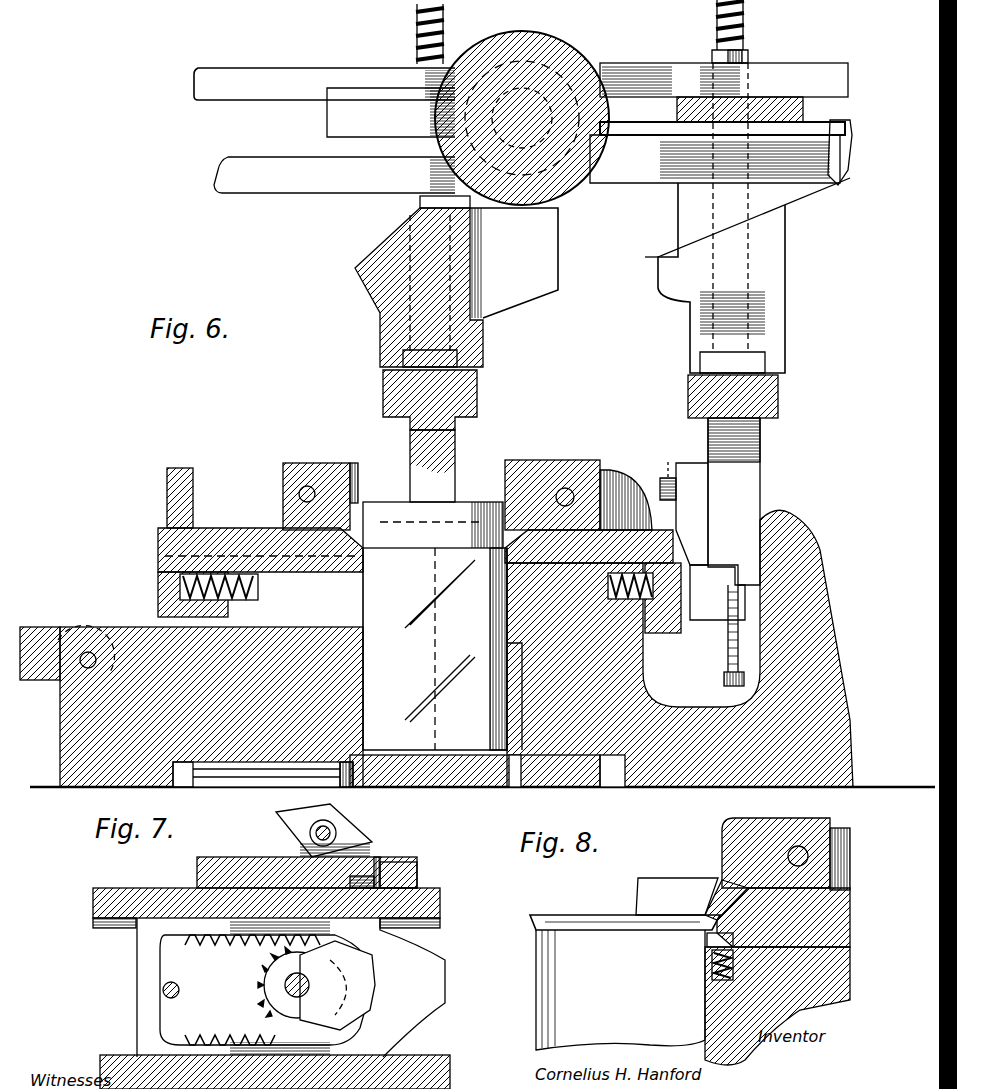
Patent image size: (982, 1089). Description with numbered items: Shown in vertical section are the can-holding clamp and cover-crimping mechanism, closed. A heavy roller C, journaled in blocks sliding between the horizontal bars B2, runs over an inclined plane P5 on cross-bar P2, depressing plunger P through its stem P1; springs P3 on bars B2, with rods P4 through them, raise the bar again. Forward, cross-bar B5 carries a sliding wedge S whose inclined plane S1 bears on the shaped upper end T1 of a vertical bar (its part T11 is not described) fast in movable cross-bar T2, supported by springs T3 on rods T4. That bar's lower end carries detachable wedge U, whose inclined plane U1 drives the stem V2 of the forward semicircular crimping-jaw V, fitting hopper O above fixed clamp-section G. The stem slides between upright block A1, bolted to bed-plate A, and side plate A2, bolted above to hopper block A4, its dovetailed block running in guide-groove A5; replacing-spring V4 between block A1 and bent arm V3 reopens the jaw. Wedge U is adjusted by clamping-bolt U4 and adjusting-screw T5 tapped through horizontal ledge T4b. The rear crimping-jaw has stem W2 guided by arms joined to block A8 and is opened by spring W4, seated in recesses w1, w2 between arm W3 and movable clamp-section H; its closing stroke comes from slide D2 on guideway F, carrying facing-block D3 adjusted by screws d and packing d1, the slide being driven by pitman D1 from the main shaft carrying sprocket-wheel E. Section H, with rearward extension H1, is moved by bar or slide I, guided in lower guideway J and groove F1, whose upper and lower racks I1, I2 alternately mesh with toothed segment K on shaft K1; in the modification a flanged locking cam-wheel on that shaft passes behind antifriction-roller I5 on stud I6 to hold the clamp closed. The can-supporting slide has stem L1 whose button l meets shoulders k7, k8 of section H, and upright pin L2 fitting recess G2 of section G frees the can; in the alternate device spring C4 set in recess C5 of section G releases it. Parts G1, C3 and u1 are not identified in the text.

In FIG. 6, the springs P3 is at (446, 22).
In FIG. 6, the horizontal bars B2 is at (305, 82).
In FIG. 6, the roller C is at (545, 55).
In FIG. 6, the springs T3 is at (750, 22).
In FIG. 6, the rods T4 is at (750, 55).
In FIG. 6, the cross-bar B5 is at (802, 82).
In FIG. 6, the block or wedge S is at (717, 152).
In FIG. 6, the upper end of vertical bar T1 is at (820, 112).
In FIG. 6, the inclined plane S1 is at (790, 190).
In FIG. 6, the shoulder T'' T11 is at (648, 257).
In FIG. 6, the movable cross-bar T2 is at (780, 410).
In FIG. 6, the rods P4 is at (428, 206).
In FIG. 6, the inclined plane P5 is at (376, 255).
In FIG. 6, the cross-bar P2 is at (480, 395).
In FIG. 6, the stem P1 is at (457, 455).
In FIG. 6, the plunger P is at (433, 525).
In FIG. 6, the hopper O is at (362, 495).
In FIG. 8, the hopper O is at (695, 878).
In FIG. 6, the block A8 is at (322, 450).
In FIG. 6, the stem W2 is at (262, 522).
In FIG. 6, the arm W3 is at (158, 606).
In FIG. 6, the spring W4 is at (207, 613).
In FIG. 6, the recess w1 is at (258, 587).
In FIG. 6, the recess w2 is at (178, 588).
In FIG. 6, the movable clamp-section H is at (211, 707).
In FIG. 6, the bar or slide I is at (52, 627).
In FIG. 7, the bar or slide I is at (438, 992).
In FIG. 6, the rearward extension H1 is at (60, 740).
In FIG. 6, the block A4 is at (560, 462).
In FIG. 8, the block A4 is at (782, 818).
In FIG. 6, the vertical side plate A2 is at (612, 470).
In FIG. 8, the vertical side plate A2 is at (840, 826).
In FIG. 6, the clamping-screw or bolt U4 is at (662, 472).
In FIG. 6, the downwardly-bent arm V3 is at (665, 495).
In FIG. 6, the upright block A1 is at (795, 525).
In FIG. 6, the crimping-jaw V is at (500, 575).
In FIG. 8, the crimping-jaw V is at (777, 913).
In FIG. 6, the stem V2 is at (640, 570).
In FIG. 6, the replacing-spring V4 is at (639, 586).
In FIG. 6, the wedge U is at (692, 514).
In FIG. 6, the inclined plane U1 is at (721, 519).
In FIG. 6, the stop u' u1 is at (660, 630).
In FIG. 8, the stop u' u1 is at (705, 940).
In FIG. 6, the horizontal ledge T4b is at (700, 648).
In FIG. 6, the adjusting-screw T5 is at (722, 670).
In FIG. 6, the cylinder G' G1 is at (440, 715).
In FIG. 6, the guide-groove A5 is at (490, 598).
In FIG. 6, the recess G2 is at (508, 700).
In FIG. 6, the upright pin L2 is at (512, 788).
In FIG. 6, the block C3 is at (612, 788).
In FIG. 6, the shoulder k8 is at (182, 788).
In FIG. 6, the button l is at (200, 788).
In FIG. 6, the stem L1 is at (260, 788).
In FIG. 7, the pitman D1 is at (300, 806).
In FIG. 7, the shoulder k7 is at (356, 808).
In FIG. 7, the slide D2 is at (225, 856).
In FIG. 7, the packing d1 is at (377, 857).
In FIG. 7, the facing-block D3 is at (400, 862).
In FIG. 7, the screws d is at (418, 873).
In FIG. 7, the guideway F is at (440, 903).
In FIG. 7, the groove F1 is at (430, 935).
In FIG. 7, the sprocket-wheel E is at (360, 955).
In FIG. 7, the toothed rotary segment K is at (269, 982).
In FIG. 7, the shaft K1 is at (330, 985).
In FIG. 7, the stud I6 is at (180, 990).
In FIG. 7, the upper toothed rack I1 is at (184, 949).
In FIG. 7, the antifriction-roller I5 is at (186, 965).
In FIG. 7, the lower toothed rack I2 is at (211, 1023).
In FIG. 7, the fixed lower guideway J is at (450, 1068).
In FIG. 7, the bed-plate A is at (100, 1072).
In FIG. 8, the spring C4 is at (705, 995).
In FIG. 8, the recess C5 is at (712, 968).
In FIG. 8, the fixed clamp-section G is at (777, 1006).